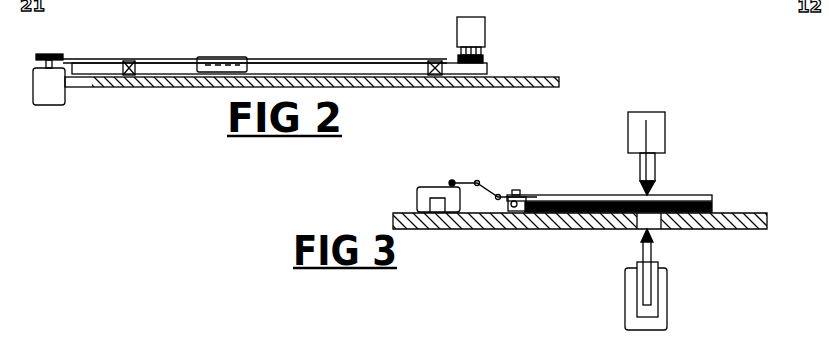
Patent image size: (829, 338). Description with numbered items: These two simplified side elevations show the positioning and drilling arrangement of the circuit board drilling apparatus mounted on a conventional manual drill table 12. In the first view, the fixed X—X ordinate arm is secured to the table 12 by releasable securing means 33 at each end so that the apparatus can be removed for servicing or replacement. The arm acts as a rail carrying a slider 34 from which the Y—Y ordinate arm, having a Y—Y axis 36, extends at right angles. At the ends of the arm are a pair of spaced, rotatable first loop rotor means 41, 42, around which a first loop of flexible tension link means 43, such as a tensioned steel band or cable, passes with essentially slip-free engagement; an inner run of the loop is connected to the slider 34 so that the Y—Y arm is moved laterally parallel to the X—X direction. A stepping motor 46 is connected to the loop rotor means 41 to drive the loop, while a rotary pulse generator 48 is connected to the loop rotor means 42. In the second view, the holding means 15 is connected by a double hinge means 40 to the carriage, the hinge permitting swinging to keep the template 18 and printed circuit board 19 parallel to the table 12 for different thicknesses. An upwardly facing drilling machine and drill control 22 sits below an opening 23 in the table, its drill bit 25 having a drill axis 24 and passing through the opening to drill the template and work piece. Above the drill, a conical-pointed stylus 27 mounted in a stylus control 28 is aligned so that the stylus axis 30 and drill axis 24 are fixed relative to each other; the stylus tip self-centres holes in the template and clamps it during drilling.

In FIG. 2, the manual drill table 12 is at (518, 87).
In FIG. 3, the manual drill table 12 is at (423, 229).
In FIG. 3, the holding means 15 is at (527, 192).
In FIG. 3, the template 18 is at (713, 198).
In FIG. 3, the printed circuit board 19 is at (713, 207).
In FIG. 3, the drilling machine and drill control 22 is at (669, 287).
In FIG. 3, the opening 23 is at (638, 229).
In FIG. 3, the drill axis 24 is at (637, 293).
In FIG. 3, the drill bit 25 is at (652, 247).
In FIG. 3, the conical-pointed stylus 27 is at (656, 168).
In FIG. 3, the stylus control 28 is at (657, 137).
In FIG. 3, the stylus axis 30 is at (643, 143).
In FIG. 2, the releasable securing means 33 is at (130, 75).
In FIG. 2, the slider 34 is at (249, 46).
In FIG. 2, the Y—Y axis 36 is at (218, 57).
In FIG. 3, the double hinge means 40 is at (483, 182).
In FIG. 2, the first loop rotor means 41 is at (35, 56).
In FIG. 2, the first loop rotor means 42 is at (486, 60).
In FIG. 2, the first loop of flexible tension link means 43 is at (320, 59).
In FIG. 2, the stepping motor 46 is at (60, 100).
In FIG. 2, the rotary pulse generator 48 is at (470, 27).